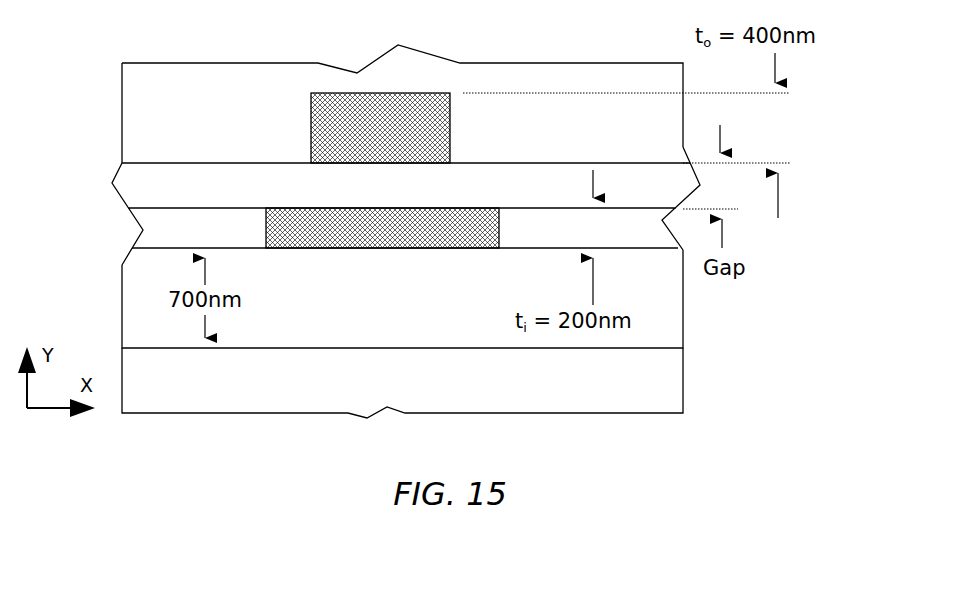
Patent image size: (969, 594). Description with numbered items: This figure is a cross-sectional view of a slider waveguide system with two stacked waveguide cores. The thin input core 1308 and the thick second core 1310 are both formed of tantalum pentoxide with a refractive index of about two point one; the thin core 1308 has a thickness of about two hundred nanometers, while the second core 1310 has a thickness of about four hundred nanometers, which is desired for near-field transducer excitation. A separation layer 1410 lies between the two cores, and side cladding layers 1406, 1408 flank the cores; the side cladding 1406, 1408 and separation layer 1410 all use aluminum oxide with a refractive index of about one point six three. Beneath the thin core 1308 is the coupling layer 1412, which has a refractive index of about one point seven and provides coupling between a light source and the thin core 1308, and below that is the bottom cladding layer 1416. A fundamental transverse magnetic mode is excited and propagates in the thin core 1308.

The side cladding layer 1406 is at (406, 104).
The second core 1310 is at (380, 128).
The separation layer 1410 is at (406, 206).
The side cladding layer 1408 is at (405, 232).
The thin core 1308 is at (382, 228).
The coupling layer 1412 is at (402, 299).
The bottom cladding layer 1416 is at (402, 383).